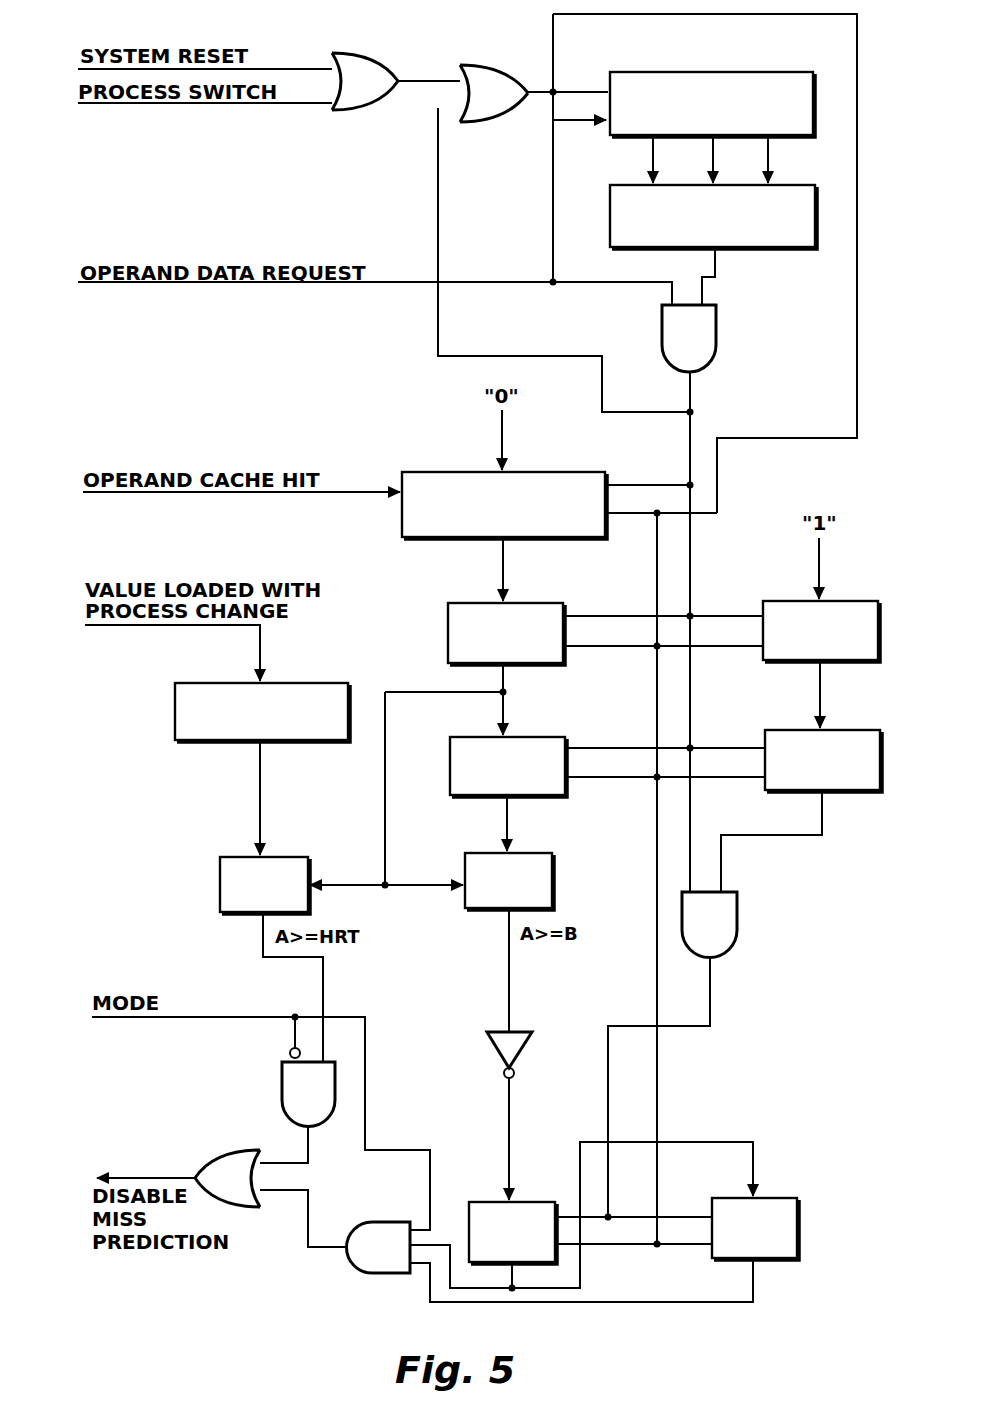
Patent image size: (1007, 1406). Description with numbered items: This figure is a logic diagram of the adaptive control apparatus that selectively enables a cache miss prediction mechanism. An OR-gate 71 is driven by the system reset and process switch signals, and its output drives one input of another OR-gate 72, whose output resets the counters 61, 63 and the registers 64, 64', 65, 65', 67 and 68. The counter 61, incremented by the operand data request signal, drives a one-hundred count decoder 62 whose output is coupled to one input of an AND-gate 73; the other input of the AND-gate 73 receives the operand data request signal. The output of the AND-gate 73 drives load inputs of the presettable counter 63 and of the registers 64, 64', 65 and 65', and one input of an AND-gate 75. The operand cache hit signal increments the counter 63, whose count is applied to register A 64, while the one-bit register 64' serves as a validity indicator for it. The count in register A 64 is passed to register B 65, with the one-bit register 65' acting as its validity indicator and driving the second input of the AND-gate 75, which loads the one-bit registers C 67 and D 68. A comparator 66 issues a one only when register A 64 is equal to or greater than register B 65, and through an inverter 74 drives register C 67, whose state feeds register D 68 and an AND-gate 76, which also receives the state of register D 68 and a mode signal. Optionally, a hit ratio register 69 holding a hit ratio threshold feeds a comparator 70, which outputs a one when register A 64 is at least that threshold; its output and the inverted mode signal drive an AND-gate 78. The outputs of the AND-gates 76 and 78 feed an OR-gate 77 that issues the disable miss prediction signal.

The counter 61 is at (776, 72).
The 100 count decoder 62 is at (776, 247).
The presettable counter 63 is at (426, 472).
The register A 64 is at (492, 616).
The one-bit register 64' is at (812, 614).
The register B 65 is at (519, 748).
The one-bit register 65' is at (814, 744).
The comparator 66 is at (554, 870).
The one-bit register C 67 is at (487, 1172).
The one-bit register D 68 is at (782, 1198).
The hit ratio register 69 is at (332, 683).
The comparator 70 is at (224, 857).
The OR-gate 71 is at (376, 62).
The OR-gate 72 is at (486, 62).
The AND-gate 73 is at (716, 335).
The inverter 74 is at (488, 1044).
The AND-gate 75 is at (737, 914).
The AND-gate 76 is at (354, 1266).
The OR-gate 77 is at (220, 1150).
The AND-gate 78 is at (282, 1104).